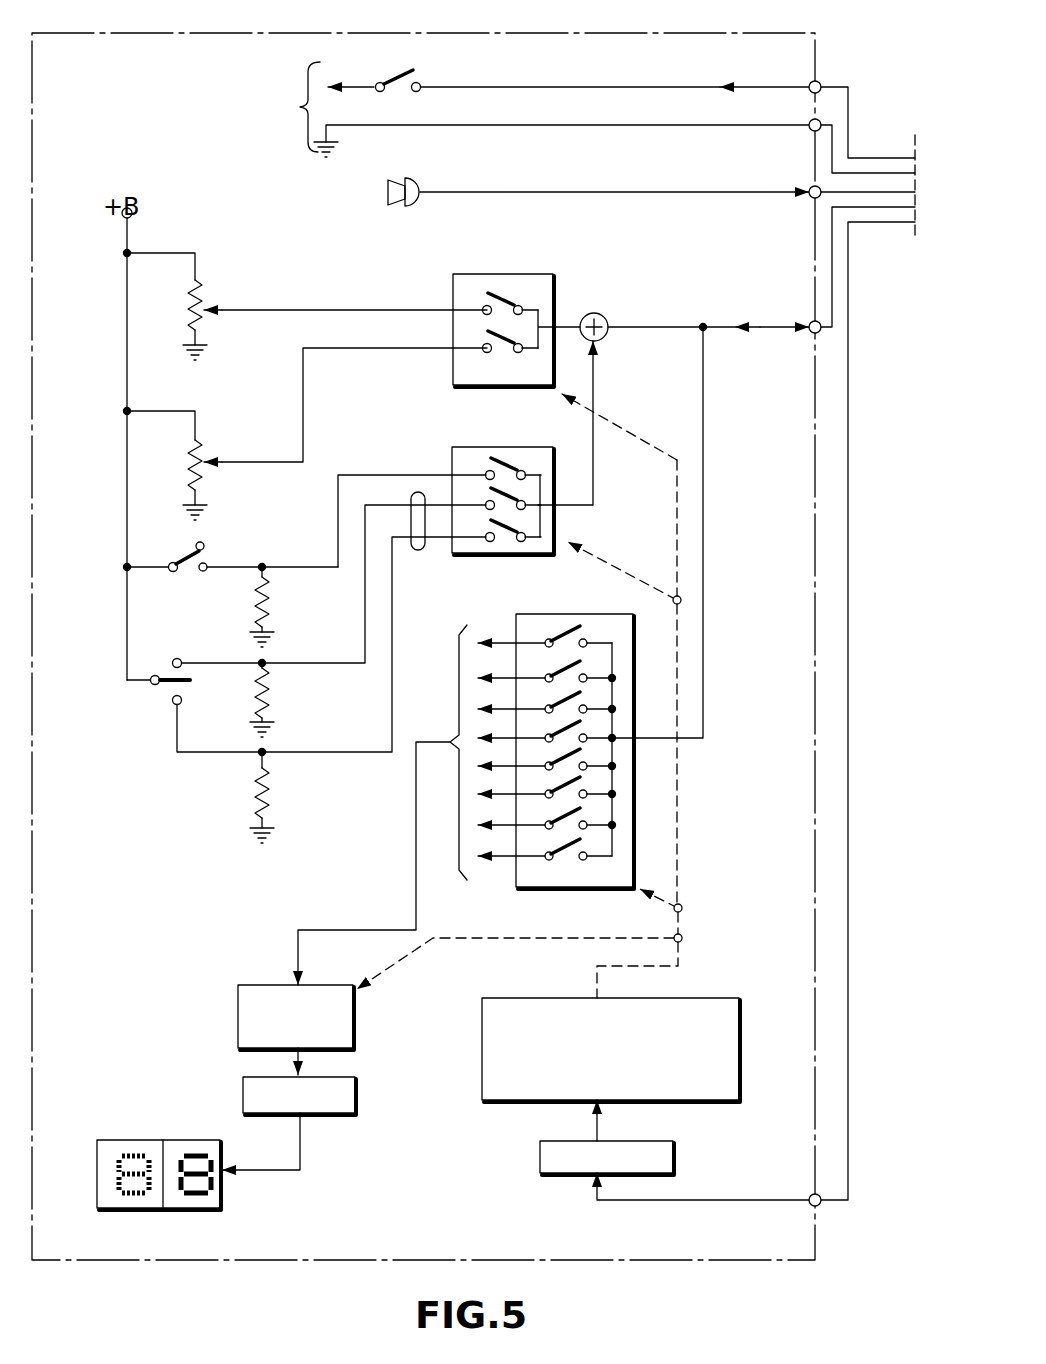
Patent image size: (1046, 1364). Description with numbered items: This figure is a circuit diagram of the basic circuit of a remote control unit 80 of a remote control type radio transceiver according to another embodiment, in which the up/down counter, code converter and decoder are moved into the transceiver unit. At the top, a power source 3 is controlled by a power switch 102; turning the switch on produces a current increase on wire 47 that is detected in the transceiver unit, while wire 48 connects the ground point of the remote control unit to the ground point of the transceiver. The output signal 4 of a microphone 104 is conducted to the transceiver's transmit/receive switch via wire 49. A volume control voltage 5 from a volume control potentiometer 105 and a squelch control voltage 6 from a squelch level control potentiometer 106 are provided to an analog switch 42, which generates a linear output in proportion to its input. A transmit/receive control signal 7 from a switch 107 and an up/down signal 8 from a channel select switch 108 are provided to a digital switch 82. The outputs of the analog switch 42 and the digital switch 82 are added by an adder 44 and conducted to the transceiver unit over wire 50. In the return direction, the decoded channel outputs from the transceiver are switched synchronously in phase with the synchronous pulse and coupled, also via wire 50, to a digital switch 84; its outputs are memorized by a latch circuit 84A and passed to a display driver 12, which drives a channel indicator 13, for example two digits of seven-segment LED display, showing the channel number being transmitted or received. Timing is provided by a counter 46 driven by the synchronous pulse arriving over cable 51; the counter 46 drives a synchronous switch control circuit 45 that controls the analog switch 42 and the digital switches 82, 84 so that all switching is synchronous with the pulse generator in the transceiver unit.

The remote control unit 80 is at (586, 36).
The power source 3 is at (542, 105).
The power switch 102 is at (418, 72).
The microphone 104 is at (418, 180).
The output signal of microphone 4 is at (520, 188).
The wire 47 is at (852, 100).
The wire 48 is at (866, 172).
The wire 49 is at (830, 190).
The wire 50 is at (828, 208).
The cable 51 is at (866, 224).
The volume control potentiometer 105 is at (200, 300).
The volume control voltage 5 is at (300, 308).
The squelch control voltage 6 is at (346, 347).
The squelch level control potentiometer 106 is at (200, 455).
The analog switch 42 is at (526, 273).
The adder 44 is at (604, 314).
The digital switch 82 is at (500, 448).
The transmit/receive control signal 7 is at (356, 476).
The up/down signal 8 is at (418, 490).
The switch 107 is at (207, 566).
The channel select switch 108 is at (162, 678).
The digital switch 84 is at (564, 613).
The latch circuit 84A is at (238, 986).
The driver 12 is at (243, 1078).
The channel indicator 13 is at (160, 1140).
The synchronous switch control circuit 45 is at (716, 998).
The counter 46 is at (680, 1142).